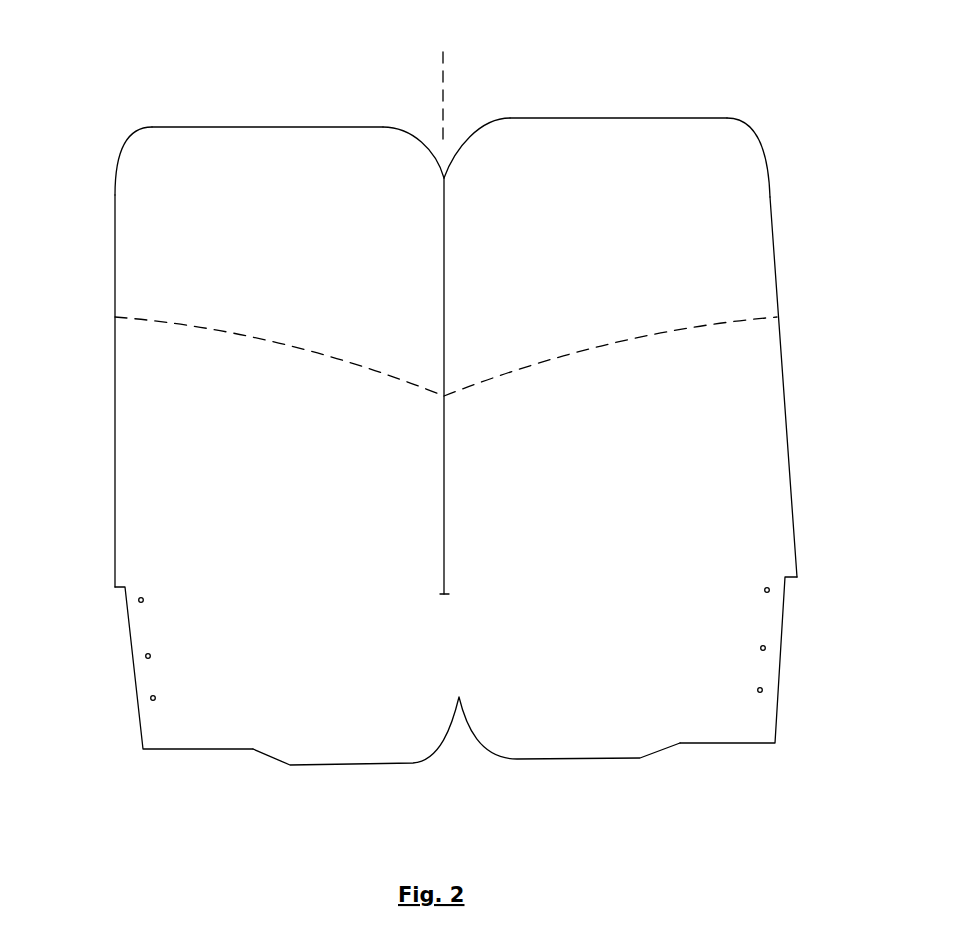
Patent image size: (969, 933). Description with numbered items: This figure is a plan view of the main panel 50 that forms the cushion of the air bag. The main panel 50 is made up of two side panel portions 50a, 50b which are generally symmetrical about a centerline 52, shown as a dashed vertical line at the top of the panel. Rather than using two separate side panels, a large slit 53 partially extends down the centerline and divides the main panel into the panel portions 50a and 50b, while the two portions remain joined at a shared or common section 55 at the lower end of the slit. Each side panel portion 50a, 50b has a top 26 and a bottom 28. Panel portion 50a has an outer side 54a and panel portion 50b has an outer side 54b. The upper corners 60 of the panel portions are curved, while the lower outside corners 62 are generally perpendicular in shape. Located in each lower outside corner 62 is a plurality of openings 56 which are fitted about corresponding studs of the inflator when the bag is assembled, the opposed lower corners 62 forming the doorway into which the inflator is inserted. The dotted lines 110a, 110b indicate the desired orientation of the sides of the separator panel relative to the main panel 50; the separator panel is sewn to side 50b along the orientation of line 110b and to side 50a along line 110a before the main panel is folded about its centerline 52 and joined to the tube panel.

The main panel 50 is at (460, 418).
The side panel portion 50a is at (265, 256).
The side panel portion 50b is at (661, 252).
The top 26 is at (265, 142).
The bottom 28 is at (295, 738).
The centerline 52 is at (447, 80).
The slit 53 is at (445, 272).
The outer side 54a is at (133, 408).
The outer side 54b is at (760, 338).
The common section 55 is at (450, 640).
The openings 56 is at (145, 601).
The curved corners 60 is at (143, 150).
The lower outside corners 62 is at (193, 723).
The dotted line 110a is at (303, 352).
The dotted line 110b is at (553, 357).